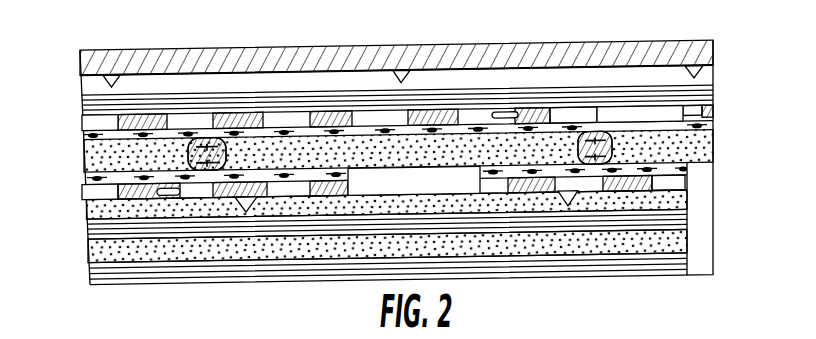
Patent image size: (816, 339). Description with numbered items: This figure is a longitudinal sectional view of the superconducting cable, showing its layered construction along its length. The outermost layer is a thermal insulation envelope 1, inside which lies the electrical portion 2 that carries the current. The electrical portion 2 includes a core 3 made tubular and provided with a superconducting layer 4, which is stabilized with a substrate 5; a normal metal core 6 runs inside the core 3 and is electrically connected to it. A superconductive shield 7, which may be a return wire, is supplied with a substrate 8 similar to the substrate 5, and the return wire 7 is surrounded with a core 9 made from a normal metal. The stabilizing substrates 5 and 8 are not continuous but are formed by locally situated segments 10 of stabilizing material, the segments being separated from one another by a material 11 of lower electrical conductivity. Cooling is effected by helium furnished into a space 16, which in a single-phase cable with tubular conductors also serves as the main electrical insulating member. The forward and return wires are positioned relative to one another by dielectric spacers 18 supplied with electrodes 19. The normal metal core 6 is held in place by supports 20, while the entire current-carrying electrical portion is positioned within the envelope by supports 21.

The thermal insulation envelope 1 is at (228, 55).
The electrical portion 2 is at (700, 256).
The core 3 is at (455, 184).
The superconducting layer 4 is at (300, 178).
The substrate 5 is at (172, 196).
The normal metal core 6 is at (372, 264).
The superconductive shield 7 is at (610, 112).
The substrate 8 is at (500, 112).
The core 9 is at (290, 95).
The segments 10 is at (93, 192).
The material of lower electrical conductivity 11 is at (237, 117).
The space 16 is at (642, 130).
The dielectric spacers 18 is at (612, 160).
The electrodes 19 is at (593, 152).
The supports 20 is at (565, 197).
The supports 21 is at (114, 85).